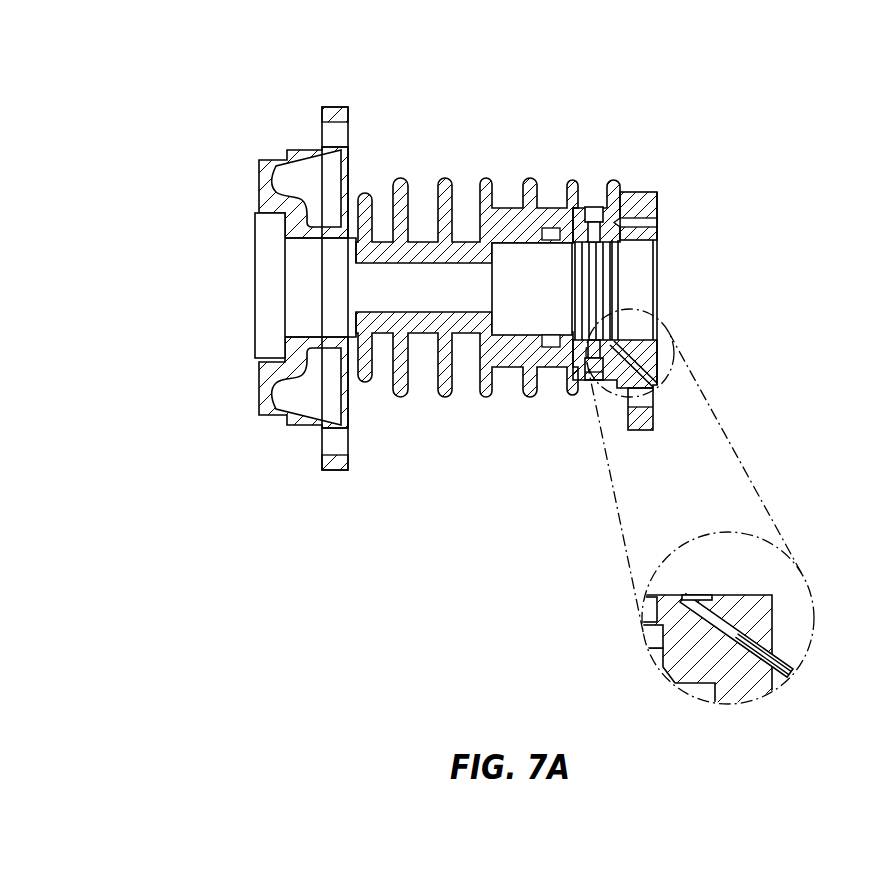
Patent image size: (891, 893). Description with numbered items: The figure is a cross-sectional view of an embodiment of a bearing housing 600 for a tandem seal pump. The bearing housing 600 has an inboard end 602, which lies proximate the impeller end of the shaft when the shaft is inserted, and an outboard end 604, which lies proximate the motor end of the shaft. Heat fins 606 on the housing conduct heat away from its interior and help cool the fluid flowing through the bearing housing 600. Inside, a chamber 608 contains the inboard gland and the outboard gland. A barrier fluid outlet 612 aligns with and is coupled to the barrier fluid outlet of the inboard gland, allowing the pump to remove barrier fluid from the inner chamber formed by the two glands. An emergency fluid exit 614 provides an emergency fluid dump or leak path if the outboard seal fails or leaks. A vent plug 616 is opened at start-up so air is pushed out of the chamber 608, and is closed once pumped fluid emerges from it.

The bearing housing 600 is at (462, 260).
The inboard end 602 is at (255, 259).
The outboard end 604 is at (646, 273).
The heat fins 606 is at (400, 177).
The chamber 608 is at (500, 272).
The barrier fluid outlet 612 is at (594, 206).
The emergency fluid exit 614 is at (673, 338).
The vent plug 616 is at (549, 226).